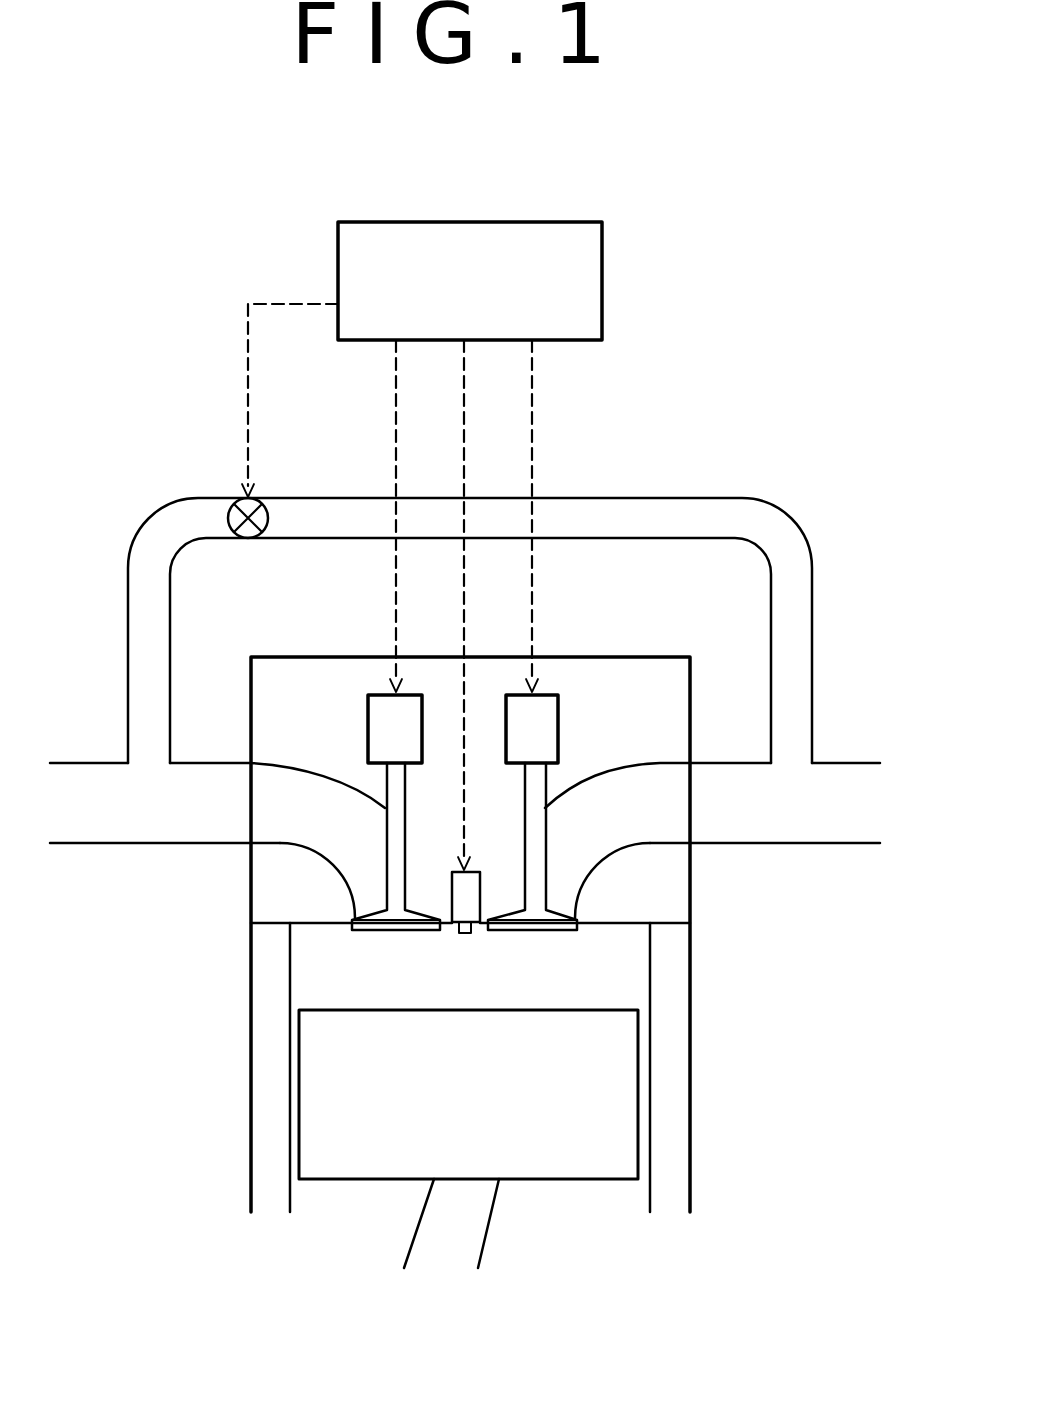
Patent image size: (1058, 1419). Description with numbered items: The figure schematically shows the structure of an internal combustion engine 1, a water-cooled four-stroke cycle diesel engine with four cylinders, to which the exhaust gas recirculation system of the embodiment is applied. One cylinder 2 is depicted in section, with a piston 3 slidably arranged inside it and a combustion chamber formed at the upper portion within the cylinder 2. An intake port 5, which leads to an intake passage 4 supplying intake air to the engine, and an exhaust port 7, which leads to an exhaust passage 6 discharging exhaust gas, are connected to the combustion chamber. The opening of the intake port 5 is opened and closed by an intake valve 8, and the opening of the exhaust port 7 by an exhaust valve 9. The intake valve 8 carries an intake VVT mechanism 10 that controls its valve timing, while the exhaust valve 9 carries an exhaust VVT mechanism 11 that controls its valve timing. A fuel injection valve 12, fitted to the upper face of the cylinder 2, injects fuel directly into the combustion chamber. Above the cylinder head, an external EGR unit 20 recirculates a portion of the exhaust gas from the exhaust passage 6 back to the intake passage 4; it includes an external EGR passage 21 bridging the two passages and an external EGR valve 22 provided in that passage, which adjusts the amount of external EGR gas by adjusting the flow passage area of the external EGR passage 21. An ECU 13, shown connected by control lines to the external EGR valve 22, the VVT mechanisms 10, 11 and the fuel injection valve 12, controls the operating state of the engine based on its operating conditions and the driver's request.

The internal combustion engine 1 is at (205, 1133).
The cylinder 2 is at (648, 966).
The piston 3 is at (640, 1115).
The intake passage 4 is at (155, 848).
The intake port 5 is at (271, 847).
The exhaust passage 6 is at (715, 848).
The exhaust port 7 is at (632, 850).
The intake valve 8 is at (387, 785).
The exhaust valve 9 is at (548, 785).
The intake VVT mechanism 10 is at (365, 700).
The exhaust VVT mechanism 11 is at (558, 705).
The fuel injection valve 12 is at (488, 872).
The ECU 13 is at (355, 222).
The external EGR unit 20 is at (503, 578).
The external EGR passage 21 is at (670, 497).
The external EGR valve 22 is at (229, 516).